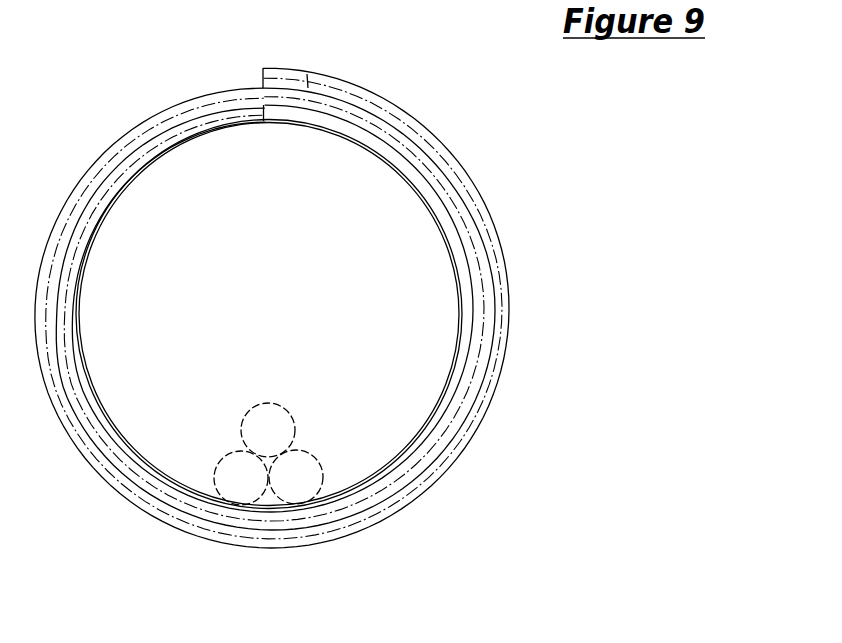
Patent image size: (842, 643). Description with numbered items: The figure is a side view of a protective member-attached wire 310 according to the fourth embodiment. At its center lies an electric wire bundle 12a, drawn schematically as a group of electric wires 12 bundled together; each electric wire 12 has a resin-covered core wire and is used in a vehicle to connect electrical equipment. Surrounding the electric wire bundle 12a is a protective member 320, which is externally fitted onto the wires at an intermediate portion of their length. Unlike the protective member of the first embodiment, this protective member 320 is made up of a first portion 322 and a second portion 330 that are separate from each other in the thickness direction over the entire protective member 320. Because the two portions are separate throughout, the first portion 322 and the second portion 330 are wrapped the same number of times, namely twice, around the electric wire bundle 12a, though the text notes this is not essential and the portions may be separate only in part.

The protective member-attached wire 310 is at (106, 78).
The protective member 320 is at (430, 115).
The first portion 322 is at (263, 86).
The second portion 330 is at (250, 88).
The electric wire 12 is at (310, 467).
The electric wire bundle 12a is at (375, 462).